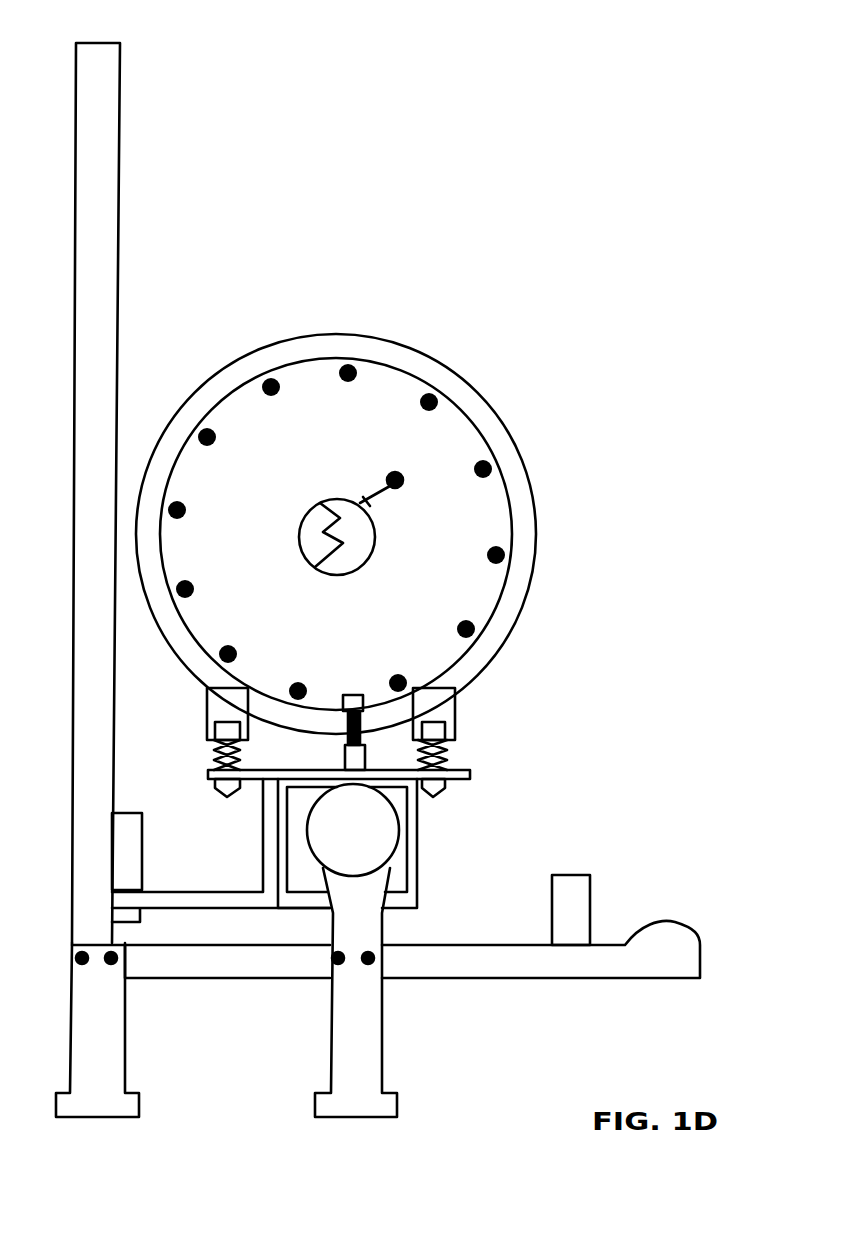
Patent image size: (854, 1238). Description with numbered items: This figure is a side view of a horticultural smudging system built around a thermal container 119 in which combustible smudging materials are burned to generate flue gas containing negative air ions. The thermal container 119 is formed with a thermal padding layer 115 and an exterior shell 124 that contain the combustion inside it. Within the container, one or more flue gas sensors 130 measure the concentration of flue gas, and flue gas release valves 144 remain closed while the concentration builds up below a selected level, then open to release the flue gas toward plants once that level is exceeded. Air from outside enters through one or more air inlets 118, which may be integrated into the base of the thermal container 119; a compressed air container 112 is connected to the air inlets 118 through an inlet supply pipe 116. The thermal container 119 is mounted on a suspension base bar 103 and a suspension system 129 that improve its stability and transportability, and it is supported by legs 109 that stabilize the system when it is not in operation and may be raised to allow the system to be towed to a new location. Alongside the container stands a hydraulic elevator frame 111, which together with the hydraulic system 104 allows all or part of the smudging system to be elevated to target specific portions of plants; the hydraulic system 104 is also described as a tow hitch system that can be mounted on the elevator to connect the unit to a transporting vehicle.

The hydraulic elevator frame 111 is at (97, 127).
The legs 109 is at (90, 1078).
The hydraulic system 104 is at (693, 972).
The suspension base bar 103 is at (247, 792).
The compressed air container 112 is at (383, 827).
The inlet supply pipe 116 is at (357, 758).
The air inlets 118 is at (347, 690).
The suspension system 129 is at (448, 762).
The exterior shell 124 is at (472, 390).
The thermal padding layer 115 is at (355, 355).
The thermal container 119 is at (320, 385).
The flue gas release valves 144 is at (303, 542).
The flue gas sensors 130 is at (400, 488).